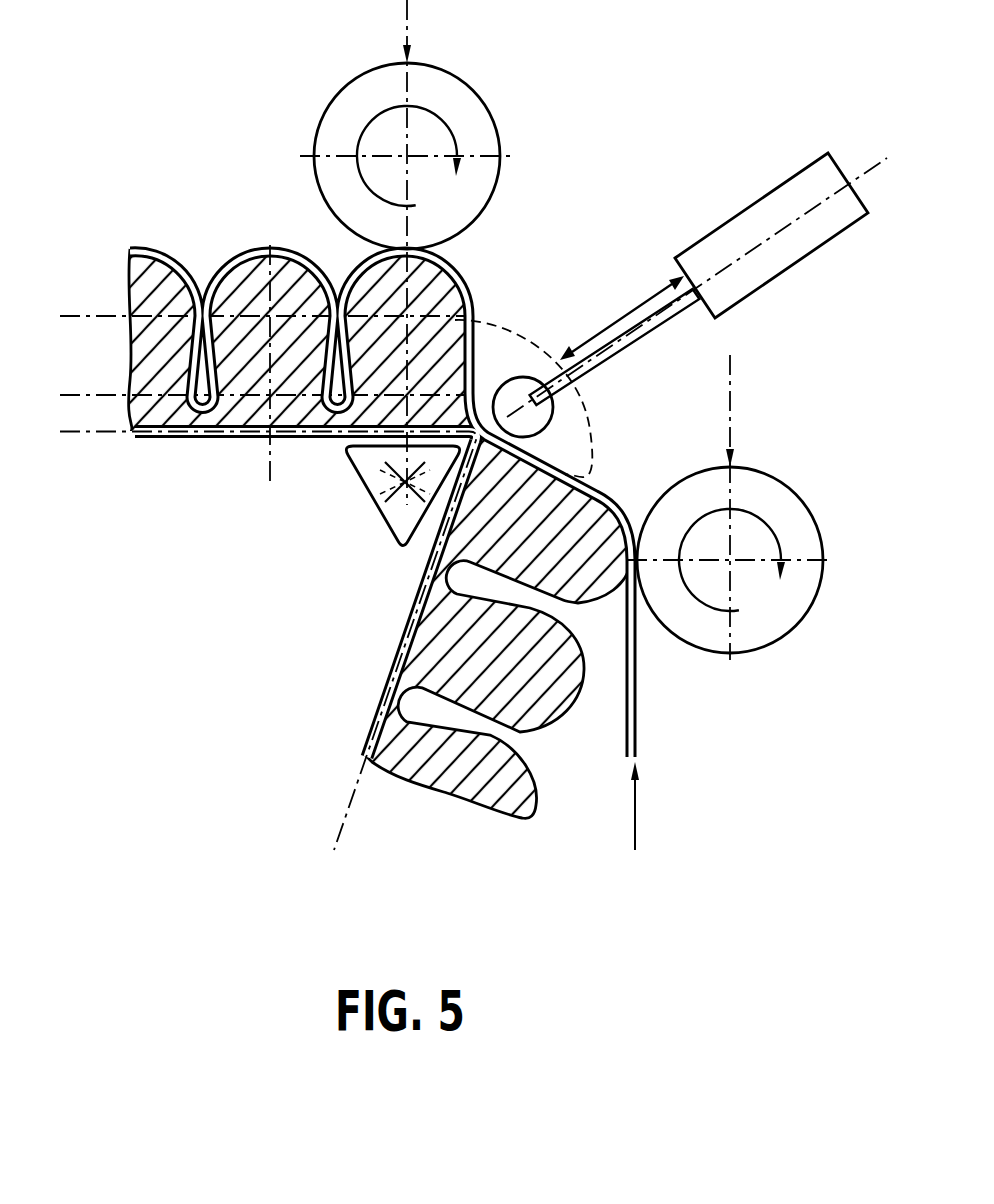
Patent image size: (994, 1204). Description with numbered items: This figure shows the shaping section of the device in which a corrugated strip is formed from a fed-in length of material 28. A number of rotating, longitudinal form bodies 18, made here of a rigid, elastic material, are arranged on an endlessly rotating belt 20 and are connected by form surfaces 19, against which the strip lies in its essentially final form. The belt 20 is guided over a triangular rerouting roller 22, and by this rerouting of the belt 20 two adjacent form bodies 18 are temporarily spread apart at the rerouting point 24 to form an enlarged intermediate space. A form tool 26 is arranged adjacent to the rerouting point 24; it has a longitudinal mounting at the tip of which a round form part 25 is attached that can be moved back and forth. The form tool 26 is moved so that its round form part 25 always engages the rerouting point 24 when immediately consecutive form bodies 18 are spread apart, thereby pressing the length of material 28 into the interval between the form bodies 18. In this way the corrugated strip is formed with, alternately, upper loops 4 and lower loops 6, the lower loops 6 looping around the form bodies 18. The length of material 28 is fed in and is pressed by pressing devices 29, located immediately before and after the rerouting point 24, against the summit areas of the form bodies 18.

The upper loops 4 is at (160, 258).
The lower loops 6 is at (268, 247).
The form bodies 18 is at (213, 430).
The form surfaces 19 is at (330, 422).
The endlessly rotating belt 20 is at (393, 660).
The triangular rerouting roller 22 is at (380, 482).
The rerouting point 24 is at (550, 443).
The round form part 25 is at (510, 378).
The form tool 26 is at (698, 268).
The length of material 28 is at (640, 727).
The pressing devices 29 is at (453, 110).